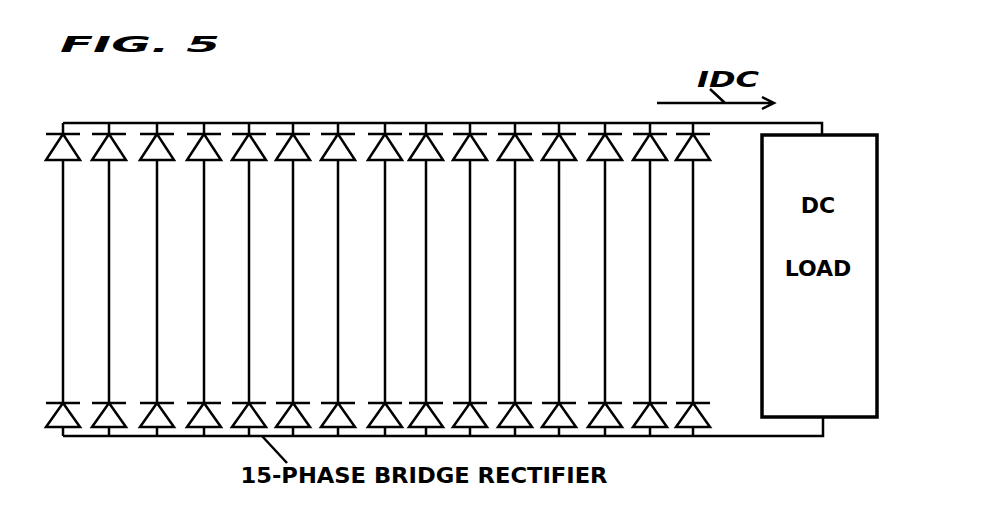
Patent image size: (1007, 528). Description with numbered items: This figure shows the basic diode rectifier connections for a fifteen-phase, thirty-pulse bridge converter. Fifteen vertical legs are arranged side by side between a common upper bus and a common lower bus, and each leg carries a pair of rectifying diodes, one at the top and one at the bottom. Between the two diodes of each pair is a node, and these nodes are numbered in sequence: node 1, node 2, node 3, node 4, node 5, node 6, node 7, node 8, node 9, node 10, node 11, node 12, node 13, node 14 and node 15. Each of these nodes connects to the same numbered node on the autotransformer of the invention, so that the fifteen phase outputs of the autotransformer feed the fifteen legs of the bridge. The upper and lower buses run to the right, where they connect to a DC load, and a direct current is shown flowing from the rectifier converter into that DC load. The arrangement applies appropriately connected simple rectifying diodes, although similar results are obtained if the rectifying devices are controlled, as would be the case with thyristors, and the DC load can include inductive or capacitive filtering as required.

The node 1 is at (63, 208).
The node 2 is at (109, 255).
The node 3 is at (157, 287).
The node 4 is at (204, 320).
The node 5 is at (249, 354).
The node 6 is at (293, 213).
The node 7 is at (338, 249).
The node 8 is at (385, 286).
The node 9 is at (426, 320).
The node 10 is at (470, 350).
The node 11 is at (515, 211).
The node 12 is at (559, 249).
The node 13 is at (605, 287).
The node 14 is at (650, 326).
The node 15 is at (693, 360).